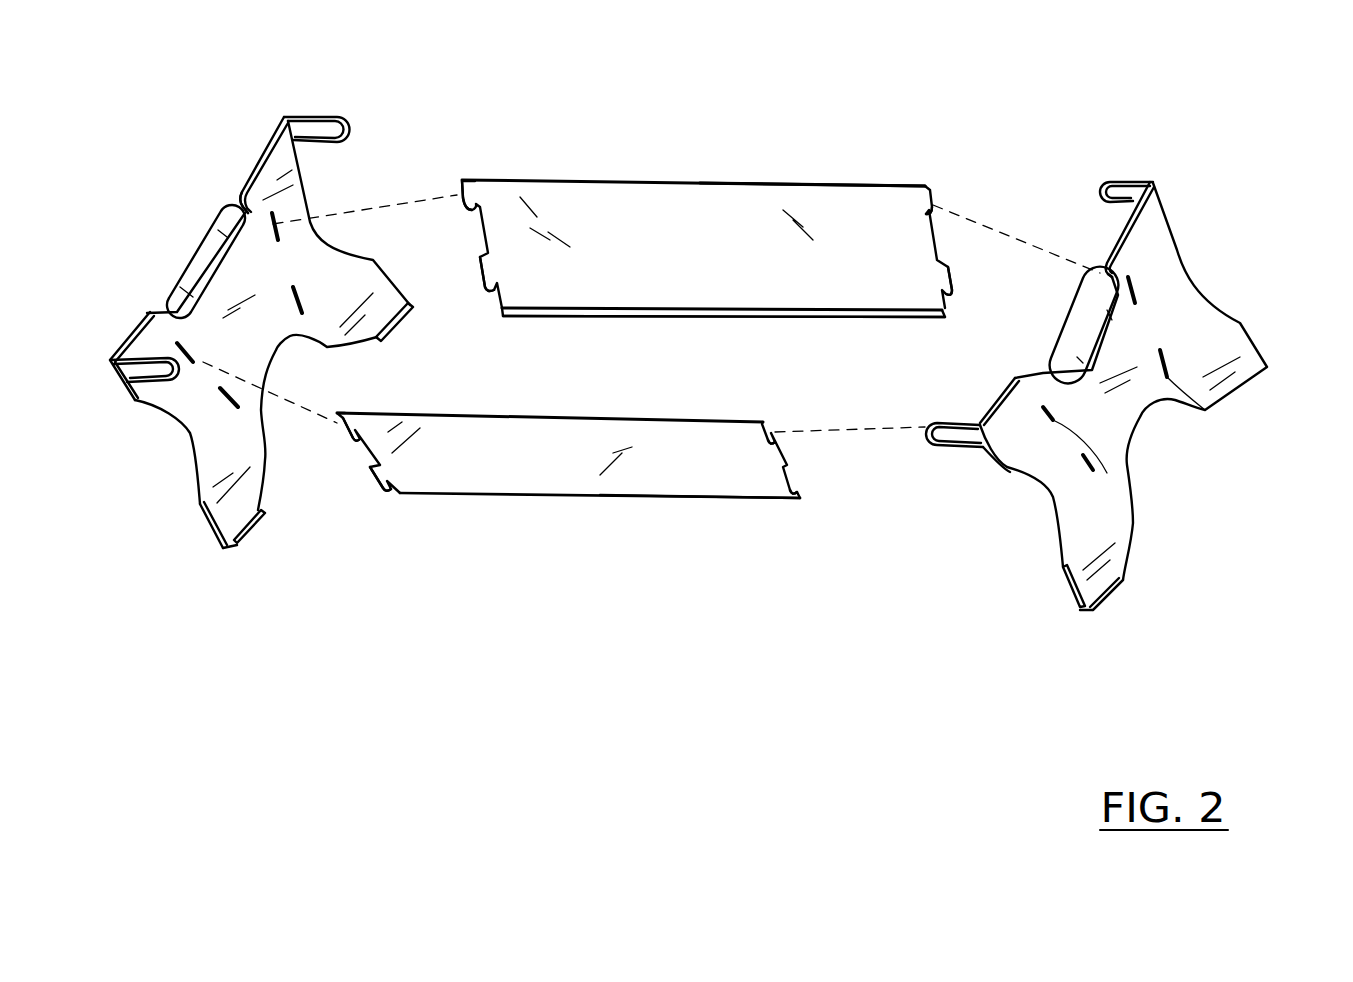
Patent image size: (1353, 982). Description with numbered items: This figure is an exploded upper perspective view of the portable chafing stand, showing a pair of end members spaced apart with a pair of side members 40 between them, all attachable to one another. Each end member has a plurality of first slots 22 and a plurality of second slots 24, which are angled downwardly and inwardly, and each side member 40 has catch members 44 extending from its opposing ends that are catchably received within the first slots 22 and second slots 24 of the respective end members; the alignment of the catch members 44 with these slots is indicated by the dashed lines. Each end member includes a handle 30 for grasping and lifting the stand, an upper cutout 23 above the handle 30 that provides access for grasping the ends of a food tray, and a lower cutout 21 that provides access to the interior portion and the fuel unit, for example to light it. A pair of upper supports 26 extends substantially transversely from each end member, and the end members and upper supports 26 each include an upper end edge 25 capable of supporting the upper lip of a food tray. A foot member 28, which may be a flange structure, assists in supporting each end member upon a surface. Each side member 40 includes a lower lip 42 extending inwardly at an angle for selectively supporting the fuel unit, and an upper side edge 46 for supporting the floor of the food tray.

The lower cutout 21 is at (277, 370).
The first slots 22 is at (240, 210).
The upper cutout 23 is at (240, 200).
The second slots 24 is at (150, 340).
The upper end edge 25 is at (270, 139).
The upper supports 26 is at (325, 127).
The foot member 28 is at (387, 330).
The handle 30 is at (197, 260).
The side members 40 is at (657, 183).
The lower lip 42 is at (600, 317).
The catch members 44 is at (460, 187).
The upper side edge 46 is at (812, 182).